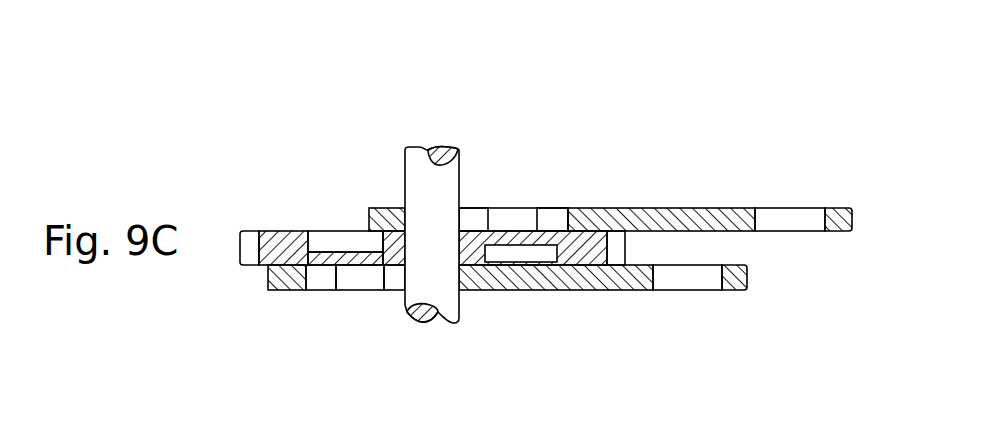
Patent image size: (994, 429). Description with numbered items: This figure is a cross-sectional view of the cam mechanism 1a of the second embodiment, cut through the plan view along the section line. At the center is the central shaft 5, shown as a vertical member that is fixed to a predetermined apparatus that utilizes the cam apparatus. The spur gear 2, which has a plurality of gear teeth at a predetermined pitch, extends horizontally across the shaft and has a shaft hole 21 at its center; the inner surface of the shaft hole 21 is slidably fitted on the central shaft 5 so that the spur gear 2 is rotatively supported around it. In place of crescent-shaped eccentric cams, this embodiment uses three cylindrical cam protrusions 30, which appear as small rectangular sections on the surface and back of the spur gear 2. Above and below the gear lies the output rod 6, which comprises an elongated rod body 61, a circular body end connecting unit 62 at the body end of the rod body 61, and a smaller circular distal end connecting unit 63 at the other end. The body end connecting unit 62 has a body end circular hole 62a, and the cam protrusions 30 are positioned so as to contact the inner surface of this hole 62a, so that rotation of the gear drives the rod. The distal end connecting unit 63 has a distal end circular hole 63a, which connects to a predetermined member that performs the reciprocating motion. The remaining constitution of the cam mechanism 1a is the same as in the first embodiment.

The cam mechanism 1a is at (320, 158).
The spur gear 2 is at (278, 231).
The central shaft 5 is at (442, 168).
The output rod 6 is at (679, 195).
The shaft hole 21 is at (407, 248).
The cam protrusion 30 is at (470, 207).
The rod body 61 is at (508, 290).
The body end connecting unit 62 is at (287, 290).
The body end circular hole 62a is at (355, 282).
The distal end connecting unit 63 is at (727, 291).
The distal end circular hole 63a is at (790, 212).